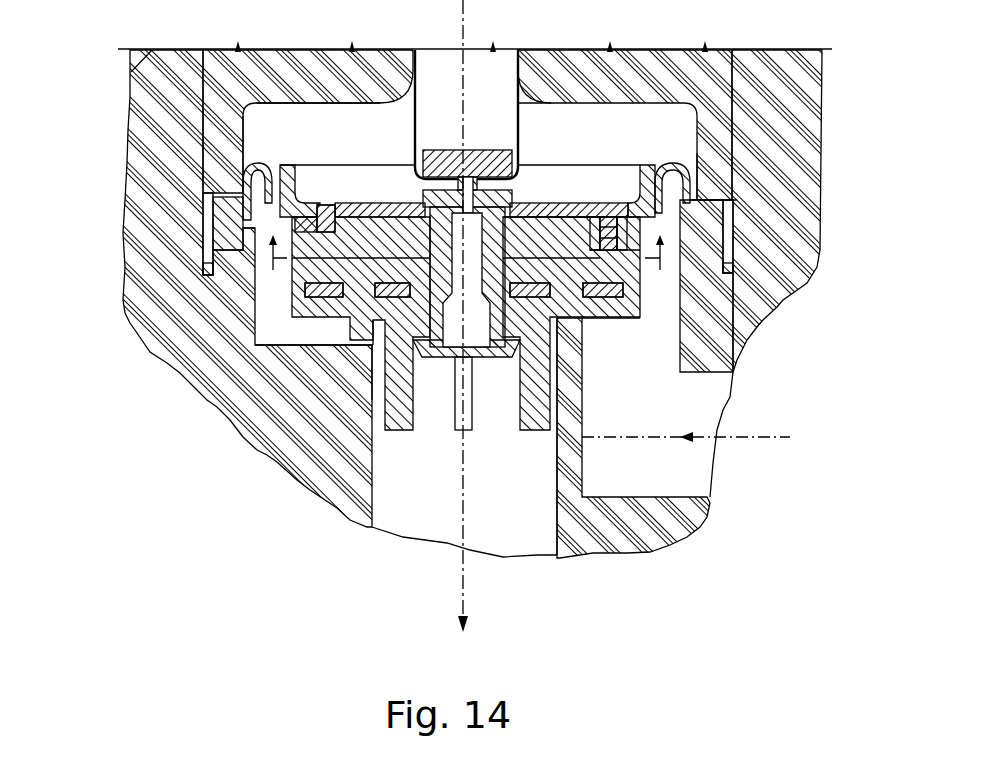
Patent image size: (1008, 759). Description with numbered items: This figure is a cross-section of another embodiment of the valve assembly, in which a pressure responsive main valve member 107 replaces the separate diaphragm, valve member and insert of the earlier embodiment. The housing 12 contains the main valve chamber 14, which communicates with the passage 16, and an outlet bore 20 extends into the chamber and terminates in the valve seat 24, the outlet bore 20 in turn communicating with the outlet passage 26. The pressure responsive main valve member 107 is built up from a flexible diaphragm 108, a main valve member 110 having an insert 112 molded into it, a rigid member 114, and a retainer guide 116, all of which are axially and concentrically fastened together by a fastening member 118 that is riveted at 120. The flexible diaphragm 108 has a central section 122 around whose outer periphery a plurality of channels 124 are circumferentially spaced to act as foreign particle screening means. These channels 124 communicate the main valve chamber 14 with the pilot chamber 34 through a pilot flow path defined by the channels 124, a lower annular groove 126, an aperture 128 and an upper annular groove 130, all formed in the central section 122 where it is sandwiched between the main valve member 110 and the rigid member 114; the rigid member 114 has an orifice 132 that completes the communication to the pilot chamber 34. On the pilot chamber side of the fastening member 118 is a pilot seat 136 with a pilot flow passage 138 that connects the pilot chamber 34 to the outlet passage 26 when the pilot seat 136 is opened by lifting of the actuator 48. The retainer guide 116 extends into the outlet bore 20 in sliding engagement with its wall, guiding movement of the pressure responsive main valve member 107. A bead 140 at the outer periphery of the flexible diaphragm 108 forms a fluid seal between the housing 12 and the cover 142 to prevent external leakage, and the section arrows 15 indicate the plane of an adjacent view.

The housing 12 is at (808, 158).
The main valve chamber 14 is at (614, 410).
The section line 15 is at (467, 265).
The passage 16 is at (686, 422).
The outlet bore 20 is at (557, 457).
The valve seat 24 is at (230, 362).
The outlet passage 26 is at (453, 316).
The pilot chamber 34 is at (541, 140).
The actuator 48 is at (484, 120).
The pressure responsive main valve member 107 is at (310, 165).
The flexible diaphragm 108 is at (683, 165).
The main valve member 110 is at (613, 322).
The insert 112 is at (243, 356).
The rigid member 114 is at (631, 163).
The retainer guide 116 is at (397, 426).
The fastening member 118 is at (425, 195).
The rivet 120 is at (445, 372).
The central section 122 is at (547, 232).
The channels 124 is at (640, 318).
The lower annular groove 126 is at (352, 318).
The aperture 128 is at (612, 230).
The upper annular groove 130 is at (325, 224).
The orifice 132 is at (324, 212).
The pilot seat 136 is at (500, 165).
The pilot flow passage 138 is at (472, 323).
The bead 140 is at (227, 222).
The cover 142 is at (703, 77).